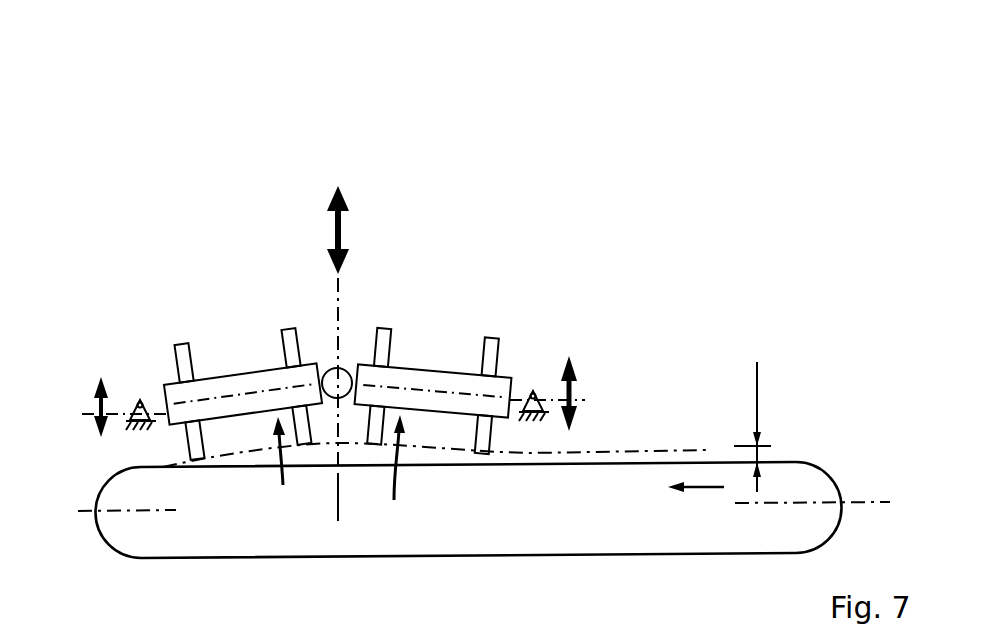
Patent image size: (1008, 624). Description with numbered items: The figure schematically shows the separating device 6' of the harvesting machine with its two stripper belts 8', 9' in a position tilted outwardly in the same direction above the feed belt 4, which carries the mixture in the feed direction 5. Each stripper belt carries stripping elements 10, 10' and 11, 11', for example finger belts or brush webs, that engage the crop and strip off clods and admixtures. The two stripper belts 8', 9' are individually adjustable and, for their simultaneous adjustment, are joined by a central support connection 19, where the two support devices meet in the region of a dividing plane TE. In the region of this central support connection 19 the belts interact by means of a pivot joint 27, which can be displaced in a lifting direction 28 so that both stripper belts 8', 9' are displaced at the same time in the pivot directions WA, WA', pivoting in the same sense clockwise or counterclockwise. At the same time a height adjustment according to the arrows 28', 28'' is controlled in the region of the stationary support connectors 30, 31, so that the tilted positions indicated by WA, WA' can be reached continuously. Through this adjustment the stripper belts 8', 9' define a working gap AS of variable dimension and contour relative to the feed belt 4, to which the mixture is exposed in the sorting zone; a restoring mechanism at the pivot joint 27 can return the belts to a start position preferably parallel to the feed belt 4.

The feed belt 4 is at (820, 485).
The feed direction 5 is at (703, 490).
The separating device 6' is at (687, 90).
The stripper belt 8' is at (470, 307).
The stripper belt 9' is at (202, 329).
The stripping element 10 is at (511, 481).
The stripping element 10' is at (370, 481).
The stripping element 11 is at (309, 476).
The stripping element 11' is at (169, 487).
The central support connection 19 is at (349, 355).
The pivot joint 27 is at (330, 362).
The lifting direction 28 is at (393, 226).
The height adjustment arrow 28' is at (637, 367).
The height adjustment arrow 28'' is at (77, 393).
The stationary support connector 30 is at (540, 418).
The stationary support connector 31 is at (128, 412).
The dividing plane TE is at (345, 290).
The working gap AS is at (760, 393).
The pivot direction arrow WA is at (439, 470).
The pivot direction arrow WA' is at (251, 484).